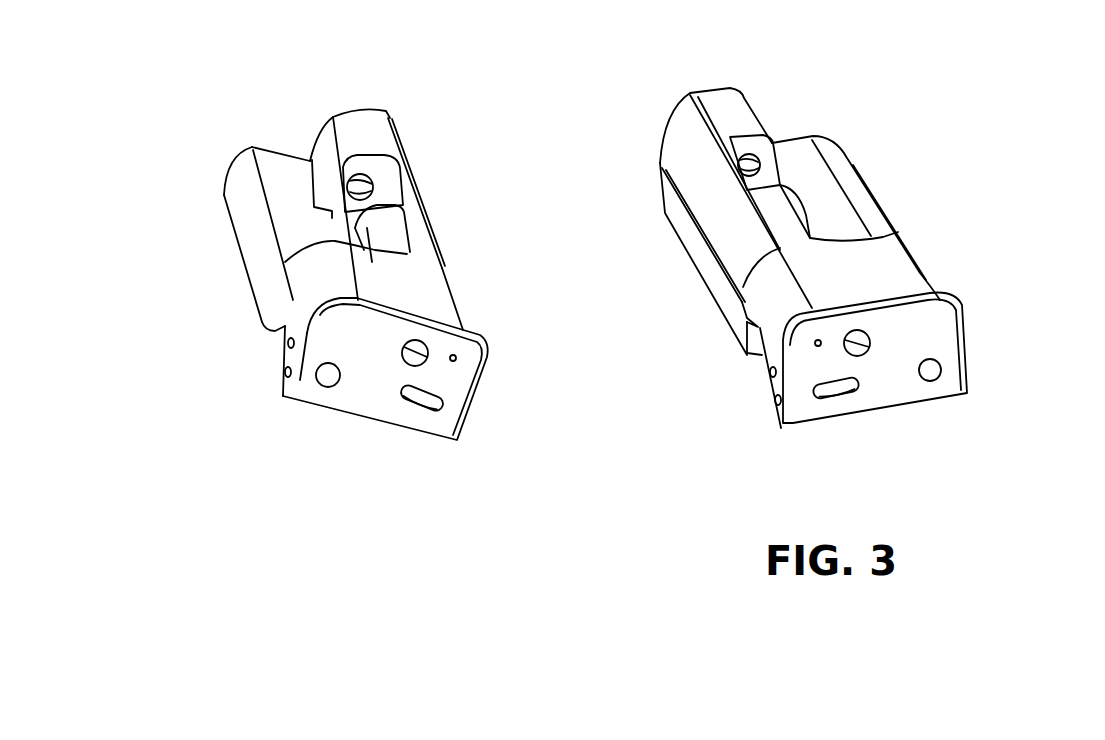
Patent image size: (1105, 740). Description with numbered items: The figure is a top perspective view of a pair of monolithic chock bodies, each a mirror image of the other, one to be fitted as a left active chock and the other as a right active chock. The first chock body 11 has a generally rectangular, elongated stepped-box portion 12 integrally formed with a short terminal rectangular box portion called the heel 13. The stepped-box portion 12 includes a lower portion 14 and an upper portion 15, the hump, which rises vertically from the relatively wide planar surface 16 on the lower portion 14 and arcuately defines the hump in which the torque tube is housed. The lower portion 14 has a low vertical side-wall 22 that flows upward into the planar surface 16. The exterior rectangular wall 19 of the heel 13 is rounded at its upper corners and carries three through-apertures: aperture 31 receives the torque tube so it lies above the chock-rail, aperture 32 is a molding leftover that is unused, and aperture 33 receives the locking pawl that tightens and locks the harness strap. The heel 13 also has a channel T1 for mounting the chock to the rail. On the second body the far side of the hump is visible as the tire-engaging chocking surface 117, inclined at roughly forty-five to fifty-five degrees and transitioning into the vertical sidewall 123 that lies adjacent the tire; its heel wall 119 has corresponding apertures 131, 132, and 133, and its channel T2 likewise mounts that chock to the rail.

The chock body 11 is at (436, 158).
The stepped-box portion 12 is at (220, 218).
The heel 13 is at (434, 285).
The lower portion 14 is at (267, 245).
The upper portion 15 is at (360, 125).
The planar surface 16 is at (280, 173).
The exterior rectangular wall 19 is at (367, 397).
The vertical side-wall 22 is at (247, 193).
The aperture 31 is at (424, 366).
The aperture 32 is at (322, 383).
The aperture 33 is at (416, 402).
The channel T1 is at (272, 332).
The tire-engaging chocking surface 117 is at (690, 137).
The exterior rectangular wall 119 is at (893, 383).
The vertical sidewall 123 is at (700, 260).
The aperture 131 is at (867, 340).
The aperture 132 is at (940, 363).
The aperture 133 is at (820, 397).
The channel T2 is at (760, 357).